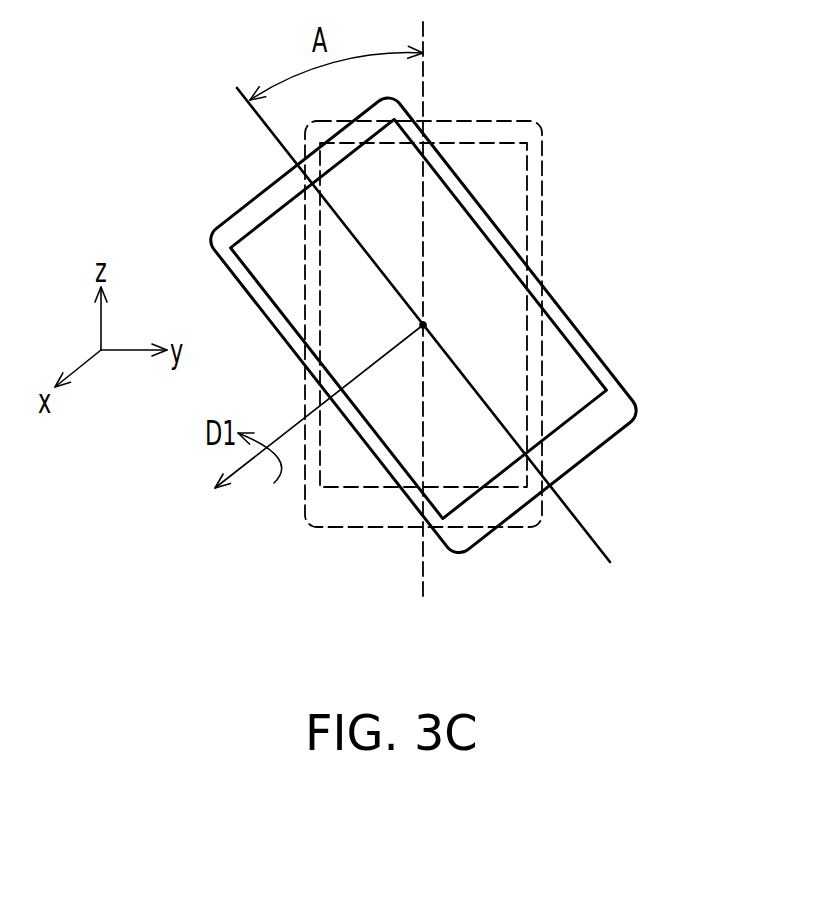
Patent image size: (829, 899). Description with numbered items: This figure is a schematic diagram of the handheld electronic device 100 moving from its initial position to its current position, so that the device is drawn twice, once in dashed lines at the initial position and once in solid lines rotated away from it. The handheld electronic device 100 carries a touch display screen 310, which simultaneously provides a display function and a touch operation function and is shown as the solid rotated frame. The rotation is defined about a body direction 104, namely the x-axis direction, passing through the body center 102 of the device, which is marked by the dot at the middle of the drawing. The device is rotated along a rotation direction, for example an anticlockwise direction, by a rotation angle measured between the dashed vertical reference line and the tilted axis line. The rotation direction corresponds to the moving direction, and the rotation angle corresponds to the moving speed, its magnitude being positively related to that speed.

The handheld electronic device 100 is at (710, 637).
The body center 102 is at (423, 325).
The body direction 104 is at (296, 426).
The touch display screen 310 is at (592, 369).